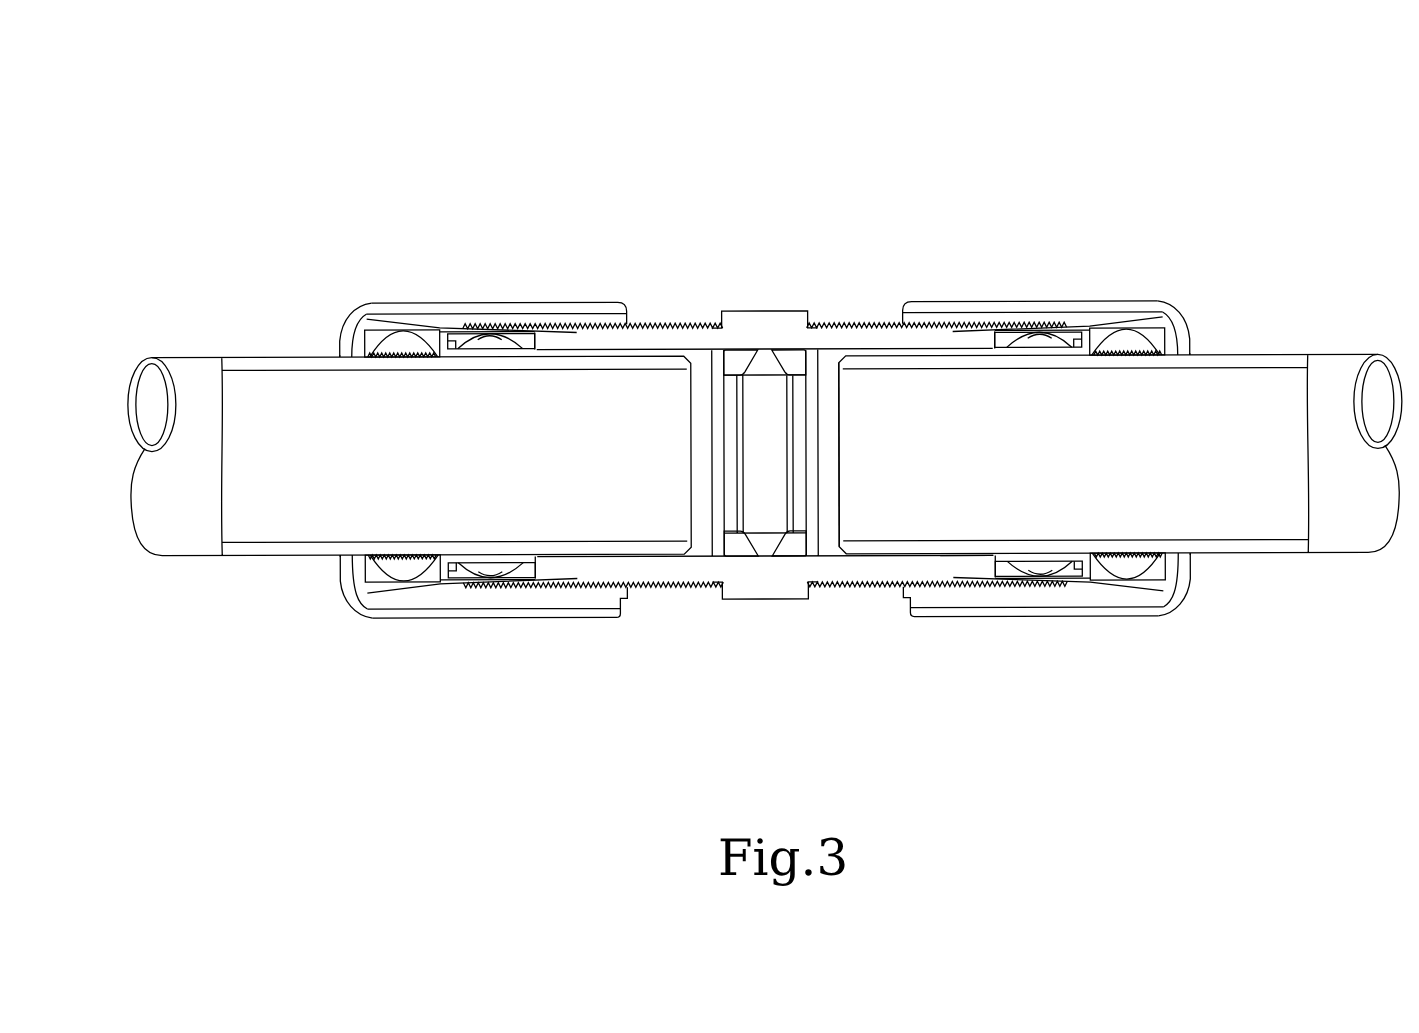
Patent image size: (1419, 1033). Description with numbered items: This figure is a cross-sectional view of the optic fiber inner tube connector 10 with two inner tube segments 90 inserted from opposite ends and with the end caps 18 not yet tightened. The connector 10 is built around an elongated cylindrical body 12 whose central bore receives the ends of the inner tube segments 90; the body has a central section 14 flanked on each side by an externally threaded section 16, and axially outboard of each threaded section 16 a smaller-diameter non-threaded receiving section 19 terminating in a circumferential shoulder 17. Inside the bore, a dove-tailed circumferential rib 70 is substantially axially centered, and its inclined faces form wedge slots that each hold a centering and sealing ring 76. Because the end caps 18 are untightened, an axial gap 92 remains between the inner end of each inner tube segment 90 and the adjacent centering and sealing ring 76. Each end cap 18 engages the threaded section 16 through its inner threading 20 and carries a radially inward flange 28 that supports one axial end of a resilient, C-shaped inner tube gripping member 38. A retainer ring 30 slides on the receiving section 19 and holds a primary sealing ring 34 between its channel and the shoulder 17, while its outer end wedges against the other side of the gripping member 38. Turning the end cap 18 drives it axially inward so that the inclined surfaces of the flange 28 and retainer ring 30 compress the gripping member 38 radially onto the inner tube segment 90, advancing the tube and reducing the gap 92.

The optic fiber inner tube connector 10 is at (791, 140).
The cylindrical body 12 is at (789, 295).
The central section 14 is at (745, 308).
The externally threaded section 16 is at (647, 320).
The circumferential shoulder 17 is at (983, 560).
The end cap 18 is at (505, 317).
The non-threaded receiving section 19 is at (560, 575).
The inner threading 20 is at (972, 325).
The radially inward flange 28 is at (345, 562).
The retainer ring 30 is at (442, 567).
The primary sealing ring 34 is at (474, 568).
The inner tube gripping member 38 is at (398, 563).
The circumferential rib 70 is at (766, 540).
The centering and sealing ring 76 is at (740, 552).
The inner tube segment 90 is at (268, 362).
The axial gap 92 is at (830, 520).